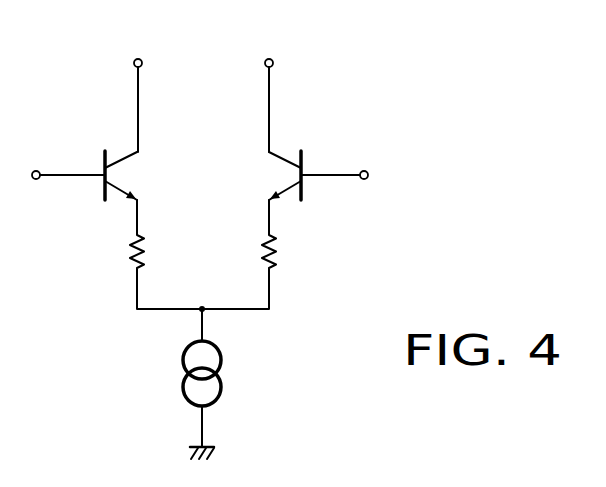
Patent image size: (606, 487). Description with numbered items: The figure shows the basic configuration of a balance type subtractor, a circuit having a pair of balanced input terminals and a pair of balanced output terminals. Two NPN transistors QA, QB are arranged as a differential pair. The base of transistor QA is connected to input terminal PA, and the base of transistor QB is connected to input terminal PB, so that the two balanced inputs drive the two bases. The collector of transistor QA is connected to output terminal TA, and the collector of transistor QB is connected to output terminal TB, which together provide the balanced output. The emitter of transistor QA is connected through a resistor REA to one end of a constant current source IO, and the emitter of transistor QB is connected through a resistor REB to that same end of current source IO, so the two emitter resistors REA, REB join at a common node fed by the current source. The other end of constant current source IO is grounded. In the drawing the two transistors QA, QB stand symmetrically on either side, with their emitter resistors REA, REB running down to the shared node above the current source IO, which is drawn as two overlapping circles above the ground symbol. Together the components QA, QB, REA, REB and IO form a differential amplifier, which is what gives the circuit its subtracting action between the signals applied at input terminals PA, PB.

The output terminal TA is at (138, 59).
The output terminal TB is at (269, 59).
The input terminal PA is at (36, 171).
The input terminal PB is at (364, 171).
The NPN transistor QA is at (115, 179).
The NPN transistor QB is at (292, 178).
The resistor REA is at (134, 255).
The resistor REB is at (274, 255).
The constant current source IO is at (222, 376).